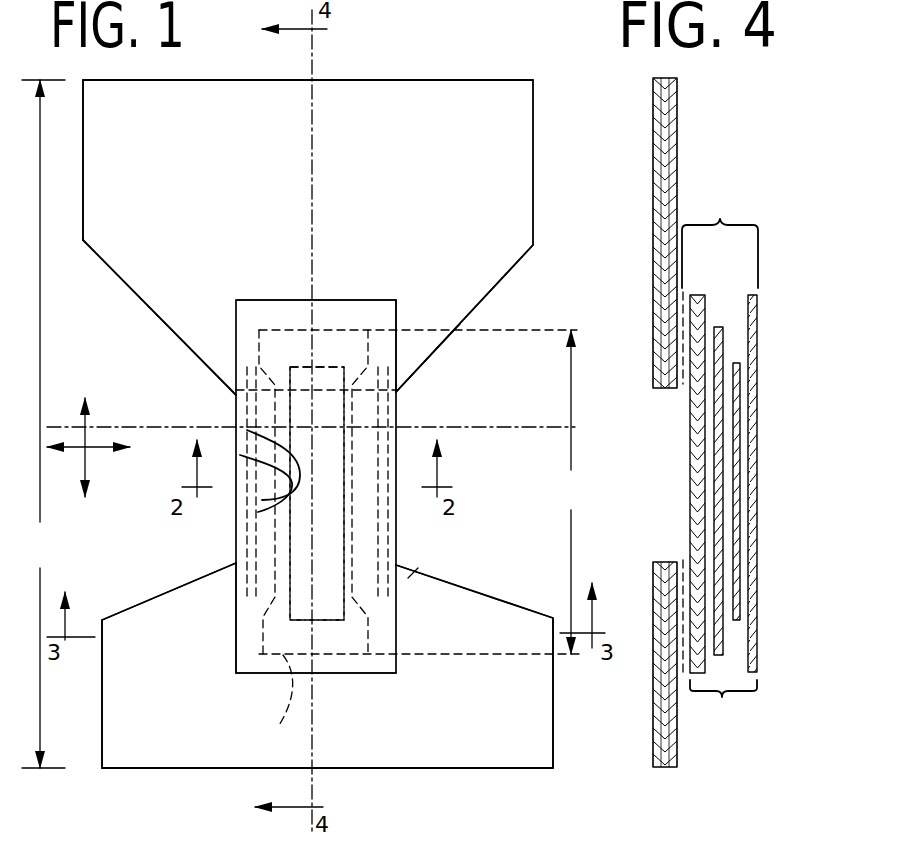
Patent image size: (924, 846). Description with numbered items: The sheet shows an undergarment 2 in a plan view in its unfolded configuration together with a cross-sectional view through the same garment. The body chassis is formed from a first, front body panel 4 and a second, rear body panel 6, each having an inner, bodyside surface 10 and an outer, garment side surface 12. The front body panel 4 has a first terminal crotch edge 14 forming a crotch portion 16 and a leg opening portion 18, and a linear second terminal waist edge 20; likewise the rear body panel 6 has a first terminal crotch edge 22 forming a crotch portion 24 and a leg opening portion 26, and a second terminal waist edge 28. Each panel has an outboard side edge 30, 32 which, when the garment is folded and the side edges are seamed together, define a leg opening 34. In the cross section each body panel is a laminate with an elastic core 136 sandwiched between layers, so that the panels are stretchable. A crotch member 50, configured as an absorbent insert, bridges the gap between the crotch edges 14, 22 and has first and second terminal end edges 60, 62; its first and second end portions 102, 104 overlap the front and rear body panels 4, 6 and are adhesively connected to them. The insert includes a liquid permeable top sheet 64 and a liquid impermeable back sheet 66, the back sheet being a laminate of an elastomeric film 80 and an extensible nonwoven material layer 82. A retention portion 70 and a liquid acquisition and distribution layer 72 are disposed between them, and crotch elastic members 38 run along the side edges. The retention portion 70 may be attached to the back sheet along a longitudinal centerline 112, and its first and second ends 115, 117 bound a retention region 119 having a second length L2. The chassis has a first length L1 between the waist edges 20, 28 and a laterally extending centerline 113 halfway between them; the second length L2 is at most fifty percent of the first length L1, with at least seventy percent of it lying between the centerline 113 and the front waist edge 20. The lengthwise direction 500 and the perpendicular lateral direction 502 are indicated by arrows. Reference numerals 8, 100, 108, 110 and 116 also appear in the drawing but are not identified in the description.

In FIG. 1, the undergarment 2 is at (158, 350).
In FIG. 1, the first, front body panel 4 is at (472, 745).
In FIG. 4, the first, front body panel 4 is at (677, 752).
In FIG. 1, the second, rear body panel 6 is at (492, 260).
In FIG. 4, the second, rear body panel 6 is at (677, 143).
In FIG. 1, the interior compartment 8 is at (172, 552).
In FIG. 1, the inner, bodyside surface 10 is at (457, 293).
In FIG. 4, the inner, bodyside surface 10 is at (677, 175).
In FIG. 4, the outer, garment side surface 12 is at (653, 178).
In FIG. 1, the first terminal crotch edge 14 is at (396, 558).
In FIG. 1, the crotch portion 16 is at (236, 547).
In FIG. 1, the leg opening portion 18 is at (160, 593).
In FIG. 1, the second terminal waist edge 20 is at (398, 770).
In FIG. 1, the first terminal crotch edge 22 is at (396, 395).
In FIG. 1, the crotch portion 24 is at (396, 410).
In FIG. 1, the leg opening portion 26 is at (141, 298).
In FIG. 4, the leg opening portion 26 is at (680, 475).
In FIG. 1, the second terminal waist edge 28 is at (395, 80).
In FIG. 1, the outboard side edge 30 is at (102, 690).
In FIG. 1, the outboard side edge 32 is at (83, 215).
In FIG. 1, the leg opening 34 is at (457, 442).
In FIG. 1, the crotch elastic members 38 is at (247, 430).
In FIG. 1, the crotch member 50 is at (396, 513).
In FIG. 4, the crotch member 50 is at (776, 292).
In FIG. 1, the first terminal end edge 60 is at (270, 673).
In FIG. 4, the first terminal end edge 60 is at (725, 696).
In FIG. 1, the second terminal end edge 62 is at (326, 300).
In FIG. 4, the second terminal end edge 62 is at (721, 219).
In FIG. 4, the top sheet 64 is at (757, 385).
In FIG. 4, the back sheet 66 is at (690, 428).
In FIG. 1, the retention portion 70 is at (250, 440).
In FIG. 4, the retention portion 70 is at (725, 535).
In FIG. 1, the liquid acquisition and distribution layer 72 is at (245, 488).
In FIG. 4, the liquid acquisition and distribution layer 72 is at (740, 455).
In FIG. 4, the elastomeric film 80 is at (706, 572).
In FIG. 4, the extensible nonwoven material layer 82 is at (690, 526).
In FIG. 1, the seal line 100 is at (428, 362).
In FIG. 1, the first end portion 102 is at (236, 640).
In FIG. 4, the first end portion 102 is at (792, 598).
In FIG. 1, the second end portion 104 is at (380, 300).
In FIG. 4, the second end portion 104 is at (760, 333).
In FIG. 1, the spout passage 108 is at (396, 470).
In FIG. 1, the channel passage 110 is at (240, 455).
In FIG. 1, the longitudinal centerline 112 is at (332, 733).
In FIG. 1, the laterally extending centerline 113 is at (57, 425).
In FIG. 1, the first end of the retention portion 115 is at (283, 740).
In FIG. 1, the flow direction 116 is at (255, 405).
In FIG. 4, the flow direction 116 is at (672, 446).
In FIG. 1, the second end of the retention portion 117 is at (288, 300).
In FIG. 4, the retention region 119 is at (592, 360).
In FIG. 4, the elastic core 136 is at (660, 227).
In FIG. 1, the lengthwise direction 500 is at (87, 438).
In FIG. 1, the lateral direction 502 is at (95, 455).
In FIG. 1, the first length L1 is at (43, 424).
In FIG. 1, the second length L2 is at (570, 492).